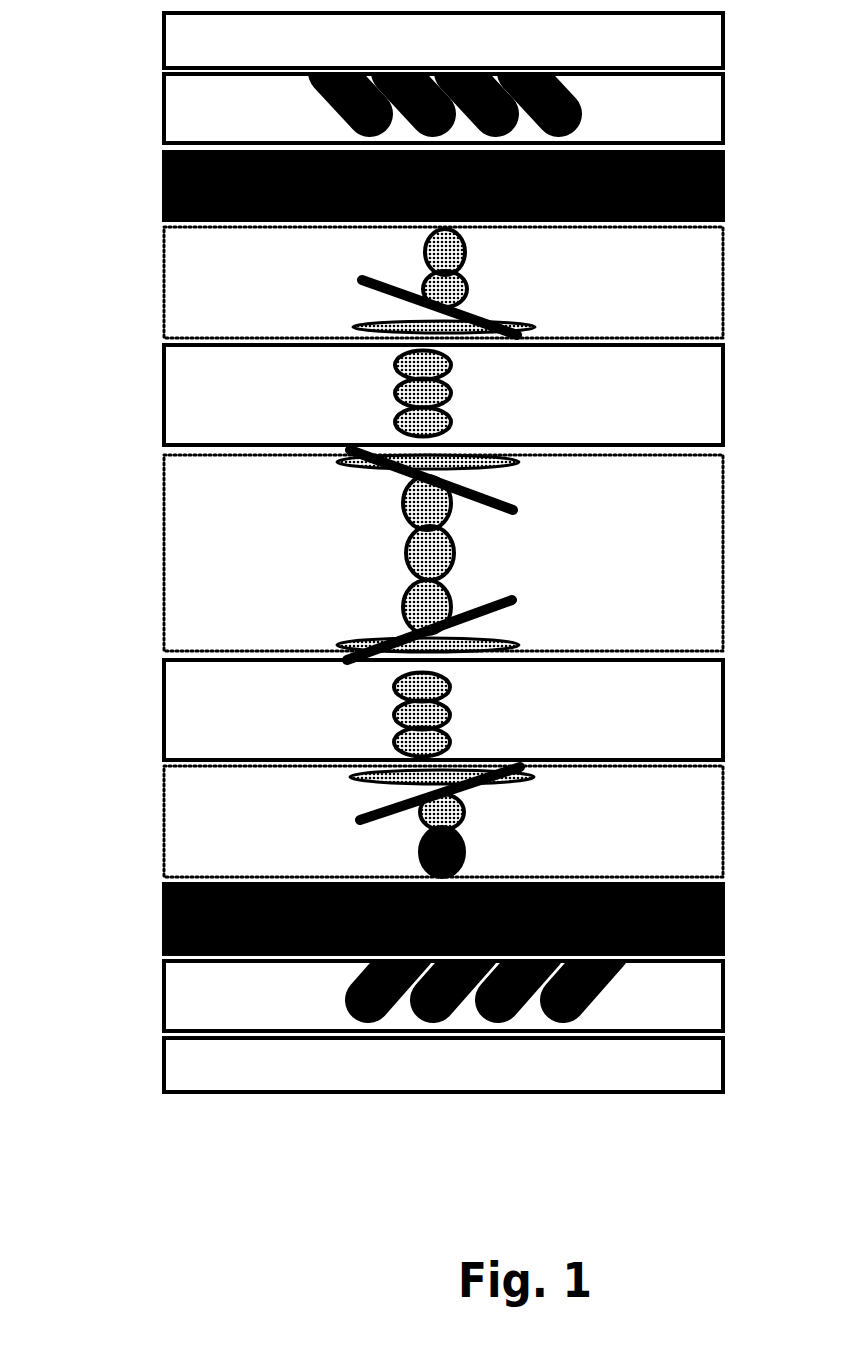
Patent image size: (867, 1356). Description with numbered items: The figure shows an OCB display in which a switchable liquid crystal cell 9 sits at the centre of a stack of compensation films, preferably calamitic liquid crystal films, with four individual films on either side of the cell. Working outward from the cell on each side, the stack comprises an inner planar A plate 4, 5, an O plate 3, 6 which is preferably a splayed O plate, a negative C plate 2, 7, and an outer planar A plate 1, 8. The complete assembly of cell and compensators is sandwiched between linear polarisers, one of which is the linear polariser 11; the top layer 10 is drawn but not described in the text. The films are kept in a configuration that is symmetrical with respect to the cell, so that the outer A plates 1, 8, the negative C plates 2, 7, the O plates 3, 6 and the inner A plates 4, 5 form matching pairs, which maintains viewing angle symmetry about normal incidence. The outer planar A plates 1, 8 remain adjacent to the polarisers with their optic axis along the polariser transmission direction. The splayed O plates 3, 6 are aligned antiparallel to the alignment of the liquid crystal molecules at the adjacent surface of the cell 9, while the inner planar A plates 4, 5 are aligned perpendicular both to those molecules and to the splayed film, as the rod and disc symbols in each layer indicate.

The upper substrate 10 is at (383, 34).
The planar A plate 1 is at (391, 107).
The negative C plate 2 is at (392, 186).
The O plate 3 is at (392, 282).
The inner planar A plate 4 is at (392, 395).
The switchable LC cell 9 is at (392, 555).
The inner planar A plate 5 is at (392, 710).
The O plate 6 is at (392, 821).
The negative C plate 7 is at (392, 916).
The planar A plate 8 is at (392, 990).
The linear polariser 11 is at (380, 1071).